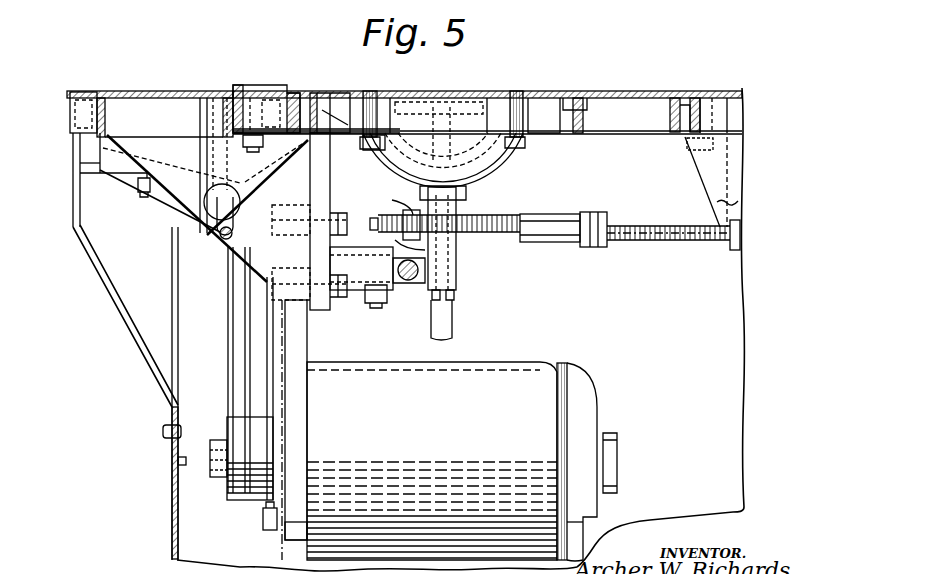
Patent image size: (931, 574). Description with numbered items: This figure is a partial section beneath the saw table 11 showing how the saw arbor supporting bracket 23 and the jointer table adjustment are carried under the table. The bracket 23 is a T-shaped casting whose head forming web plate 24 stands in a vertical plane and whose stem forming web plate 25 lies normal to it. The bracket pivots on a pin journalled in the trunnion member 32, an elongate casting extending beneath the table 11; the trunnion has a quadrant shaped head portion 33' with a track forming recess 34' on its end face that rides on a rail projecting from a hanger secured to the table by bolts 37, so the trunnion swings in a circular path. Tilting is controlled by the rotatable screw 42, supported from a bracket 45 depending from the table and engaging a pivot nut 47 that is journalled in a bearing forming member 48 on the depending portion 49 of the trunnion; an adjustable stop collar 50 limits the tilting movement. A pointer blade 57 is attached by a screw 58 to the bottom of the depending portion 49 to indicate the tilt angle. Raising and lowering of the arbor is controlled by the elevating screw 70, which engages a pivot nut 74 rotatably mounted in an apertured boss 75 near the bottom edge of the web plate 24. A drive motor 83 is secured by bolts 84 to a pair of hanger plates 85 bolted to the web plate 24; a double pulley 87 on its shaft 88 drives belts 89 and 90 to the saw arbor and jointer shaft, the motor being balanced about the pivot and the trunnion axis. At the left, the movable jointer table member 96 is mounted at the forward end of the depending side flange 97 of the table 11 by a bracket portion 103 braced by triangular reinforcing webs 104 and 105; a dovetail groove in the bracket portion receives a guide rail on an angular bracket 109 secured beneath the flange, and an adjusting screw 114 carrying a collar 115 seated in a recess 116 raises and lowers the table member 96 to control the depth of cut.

The table 11 is at (543, 96).
The movable table member 96 is at (124, 93).
The bracket portion 103 is at (200, 123).
The depending side flange 97 is at (240, 110).
The bolts 37 is at (370, 96).
The head portion 33' is at (457, 142).
The track forming recess 34' is at (470, 137).
The trunnion member 32 is at (460, 207).
The bearing forming member 48 is at (432, 212).
The pivot nut 47 is at (410, 220).
The depending portion 49 is at (435, 240).
The stop collar 50 is at (557, 219).
The tilting screw 42 is at (672, 243).
The bracket 45 is at (712, 180).
The elevating screw 70 is at (410, 282).
The apertured boss 75 is at (367, 293).
The pivot nut 74 is at (354, 309).
The supporting bracket 23 is at (315, 309).
The web plate 24 is at (312, 221).
The collar 115 is at (307, 140).
The reinforcing web 105 is at (100, 150).
The reinforcing web 104 is at (150, 206).
The recess 116 is at (167, 220).
The adjusting screw 114 is at (214, 243).
The stem forming web plate 25 is at (227, 247).
The angular bracket 109 is at (259, 217).
The drive belt 90 is at (236, 323).
The drive belt 89 is at (260, 377).
The motor shaft 88 is at (213, 463).
The double pulley 87 is at (227, 497).
The bolts 84 is at (266, 528).
The hanger plates 85 is at (292, 525).
The drive motor 83 is at (537, 377).
The pointer blade 57 is at (447, 325).
The screw 58 is at (456, 305).